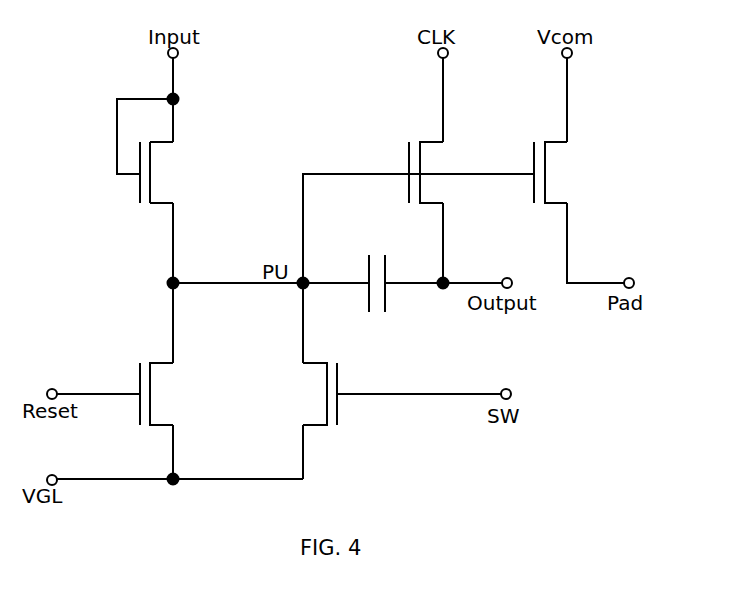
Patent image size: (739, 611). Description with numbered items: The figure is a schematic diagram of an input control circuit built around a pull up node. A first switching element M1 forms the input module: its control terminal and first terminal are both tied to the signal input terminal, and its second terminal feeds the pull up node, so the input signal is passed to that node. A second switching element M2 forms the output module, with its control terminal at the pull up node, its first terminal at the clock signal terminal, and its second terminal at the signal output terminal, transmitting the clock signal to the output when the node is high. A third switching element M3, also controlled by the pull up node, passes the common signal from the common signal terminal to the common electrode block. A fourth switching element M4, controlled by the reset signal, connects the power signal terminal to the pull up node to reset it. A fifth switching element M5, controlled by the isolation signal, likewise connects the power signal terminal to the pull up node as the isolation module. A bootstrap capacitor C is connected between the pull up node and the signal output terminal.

The first switching element M1 is at (152, 151).
The second switching element M2 is at (434, 165).
The third switching element M3 is at (579, 165).
The fourth switching element M4 is at (122, 381).
The fifth switching element M5 is at (395, 381).
The bootstrap capacitor C is at (406, 301).